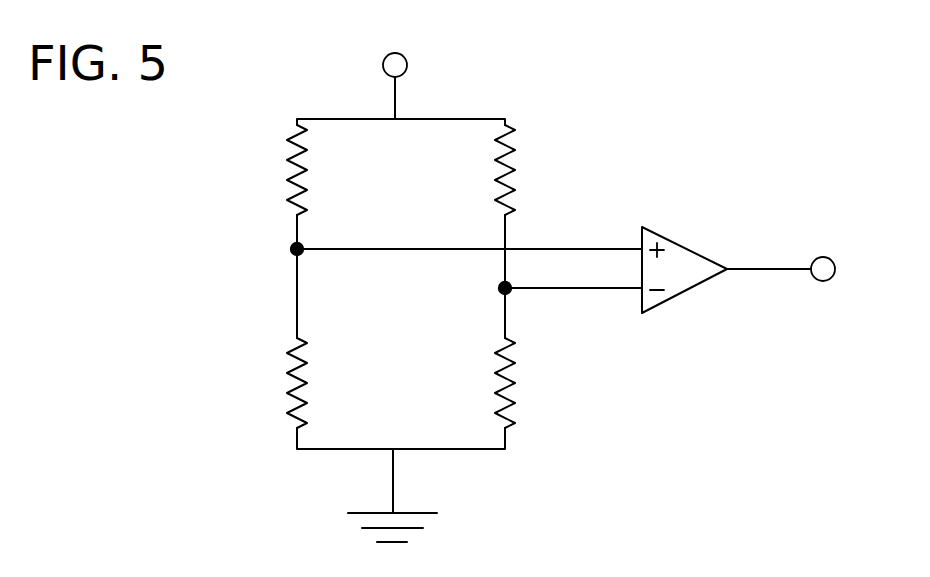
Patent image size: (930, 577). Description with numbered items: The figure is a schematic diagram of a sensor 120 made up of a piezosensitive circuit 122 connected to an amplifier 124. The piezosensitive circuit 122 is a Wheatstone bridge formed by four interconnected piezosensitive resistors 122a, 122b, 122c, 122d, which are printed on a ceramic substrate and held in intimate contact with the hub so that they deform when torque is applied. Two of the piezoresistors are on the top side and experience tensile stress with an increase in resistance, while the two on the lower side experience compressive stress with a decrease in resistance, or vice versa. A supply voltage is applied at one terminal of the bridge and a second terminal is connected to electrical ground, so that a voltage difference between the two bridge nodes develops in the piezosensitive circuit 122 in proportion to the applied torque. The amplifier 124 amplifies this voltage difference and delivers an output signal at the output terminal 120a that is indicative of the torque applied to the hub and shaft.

The sensor 120 is at (622, 432).
The output terminal 120a is at (758, 270).
The piezosensitive circuit 122 is at (303, 102).
The piezosensitive resistor 122a is at (294, 182).
The piezosensitive resistor 122b is at (509, 178).
The piezosensitive resistor 122c is at (294, 393).
The piezosensitive resistor 122d is at (509, 393).
The amplifier 124 is at (683, 243).